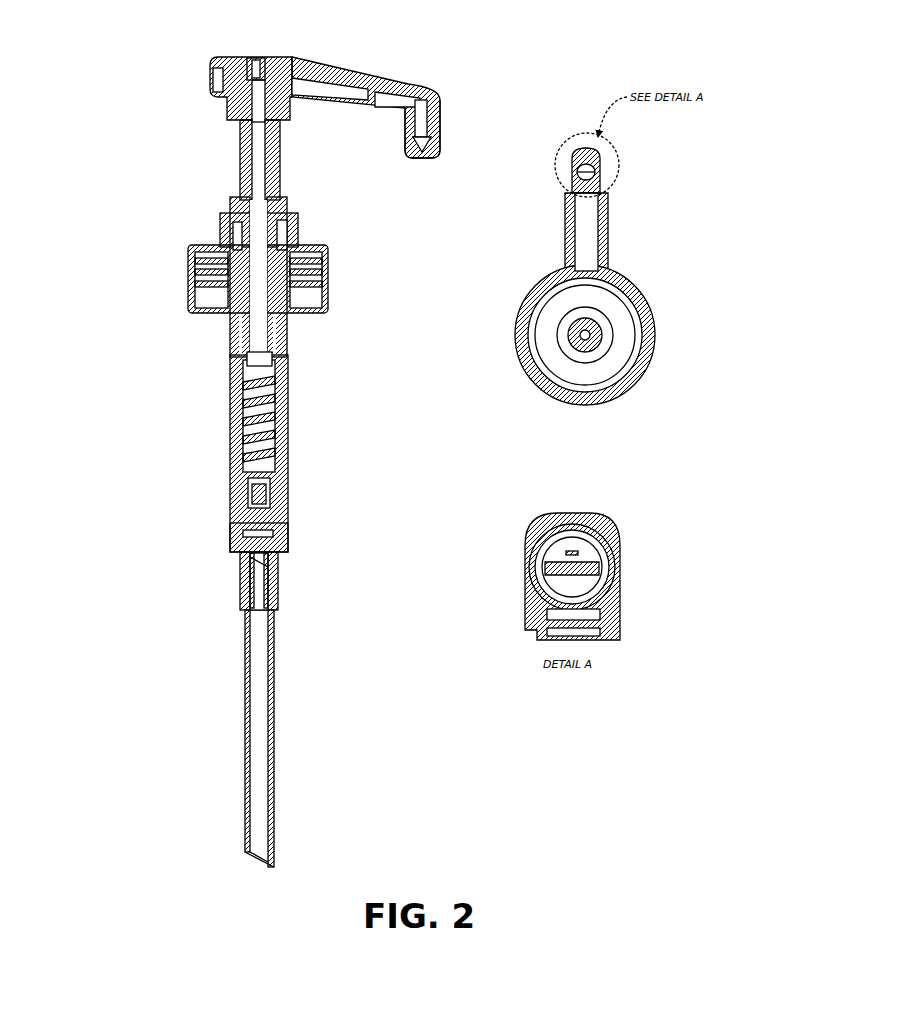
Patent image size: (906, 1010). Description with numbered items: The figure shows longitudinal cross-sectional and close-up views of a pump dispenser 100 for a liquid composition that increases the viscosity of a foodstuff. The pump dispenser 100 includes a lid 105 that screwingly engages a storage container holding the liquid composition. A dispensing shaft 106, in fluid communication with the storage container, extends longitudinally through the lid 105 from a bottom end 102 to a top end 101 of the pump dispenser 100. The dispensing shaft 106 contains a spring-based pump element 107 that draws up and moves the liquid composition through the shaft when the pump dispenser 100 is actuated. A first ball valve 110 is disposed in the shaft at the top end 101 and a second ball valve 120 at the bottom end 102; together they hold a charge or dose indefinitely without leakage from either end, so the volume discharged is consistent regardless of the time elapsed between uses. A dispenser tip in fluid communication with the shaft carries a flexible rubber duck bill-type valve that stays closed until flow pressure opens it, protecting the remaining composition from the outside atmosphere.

The pump dispenser 100 is at (142, 63).
The top end 101 is at (196, 74).
The bottom end 102 is at (218, 689).
The lid 105 is at (190, 282).
The dispensing shaft 106 is at (293, 640).
The spring-based pump element 107 is at (289, 445).
The first ball valve 110 is at (258, 57).
The second ball valve 120 is at (237, 550).